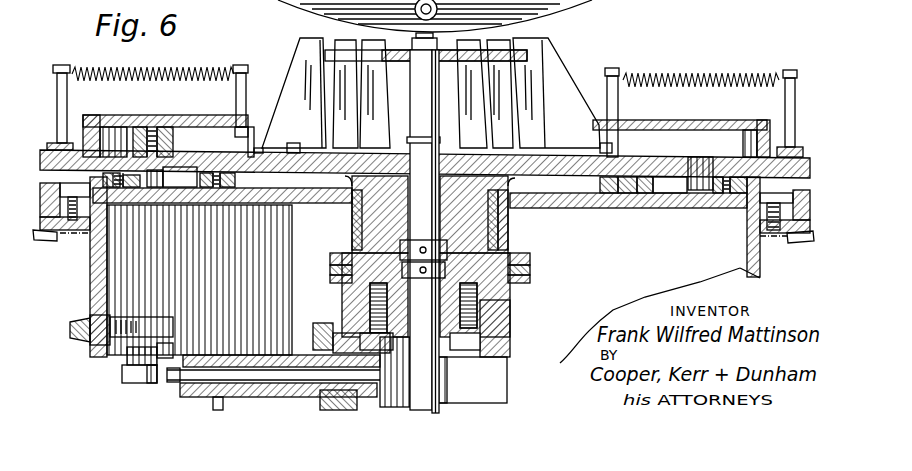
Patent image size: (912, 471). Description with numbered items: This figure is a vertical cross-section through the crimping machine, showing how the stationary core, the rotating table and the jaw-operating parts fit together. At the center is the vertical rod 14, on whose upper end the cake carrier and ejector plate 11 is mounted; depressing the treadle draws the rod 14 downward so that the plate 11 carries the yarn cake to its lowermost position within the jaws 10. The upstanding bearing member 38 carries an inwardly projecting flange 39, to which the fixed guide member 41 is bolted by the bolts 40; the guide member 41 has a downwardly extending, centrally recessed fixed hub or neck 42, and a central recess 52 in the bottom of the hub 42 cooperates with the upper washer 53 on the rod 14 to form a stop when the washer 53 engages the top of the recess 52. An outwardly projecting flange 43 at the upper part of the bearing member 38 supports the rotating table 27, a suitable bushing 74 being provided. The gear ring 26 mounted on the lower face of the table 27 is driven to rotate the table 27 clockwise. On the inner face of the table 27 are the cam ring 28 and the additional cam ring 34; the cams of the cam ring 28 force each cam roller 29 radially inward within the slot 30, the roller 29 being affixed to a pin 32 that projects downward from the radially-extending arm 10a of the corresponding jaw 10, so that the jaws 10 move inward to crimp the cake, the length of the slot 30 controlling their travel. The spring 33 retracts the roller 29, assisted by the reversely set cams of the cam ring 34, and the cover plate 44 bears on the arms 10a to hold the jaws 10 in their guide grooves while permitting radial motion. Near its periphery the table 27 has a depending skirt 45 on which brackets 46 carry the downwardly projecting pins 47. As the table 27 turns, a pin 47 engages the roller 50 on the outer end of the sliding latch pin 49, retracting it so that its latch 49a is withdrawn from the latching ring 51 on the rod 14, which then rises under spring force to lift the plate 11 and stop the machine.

The jaw 10 is at (290, 65).
The radially-extending arm 10a is at (215, 141).
The cake carrier and ejector plate 11 is at (520, 58).
The rod 14 is at (438, 87).
The gear ring 26 is at (40, 238).
The rotating table 27 is at (55, 233).
The cam ring 28 is at (83, 180).
The cam roller 29 is at (163, 182).
The slot 30 is at (188, 187).
The pin 32 is at (135, 116).
The spring 33 is at (178, 72).
The additional cam ring 34 is at (219, 187).
The upstanding bearing member 38 is at (510, 313).
The inwardly projecting flange 39 is at (483, 329).
The bolts 40 is at (342, 297).
The fixed guide member 41 is at (256, 151).
The fixed hub or neck 42 is at (373, 210).
The outwardly projecting flange 43 is at (524, 282).
The cover plate 44 is at (192, 115).
The depending flange member or skirt 45 is at (91, 291).
The brackets 46 is at (117, 331).
The downwardly projecting pins 47 is at (173, 350).
The sliding latch pin 49 is at (173, 380).
The latch 49a is at (400, 391).
The roller 50 is at (130, 364).
The latching ring 51 is at (455, 264).
The central recess 52 is at (400, 257).
The upper washer 53 is at (447, 248).
The bushing 74 is at (512, 221).